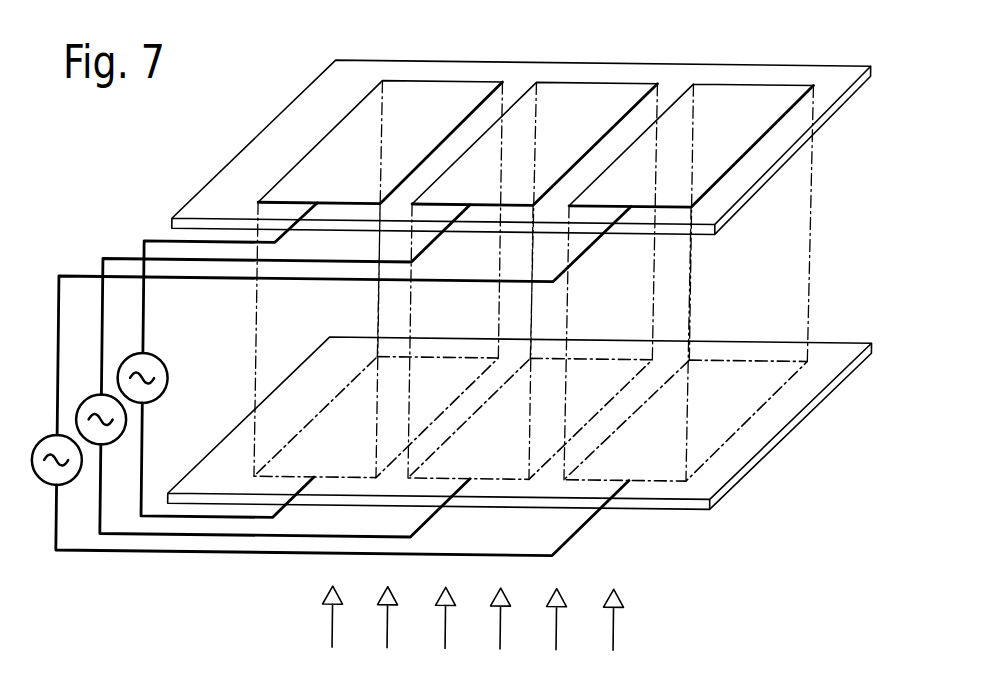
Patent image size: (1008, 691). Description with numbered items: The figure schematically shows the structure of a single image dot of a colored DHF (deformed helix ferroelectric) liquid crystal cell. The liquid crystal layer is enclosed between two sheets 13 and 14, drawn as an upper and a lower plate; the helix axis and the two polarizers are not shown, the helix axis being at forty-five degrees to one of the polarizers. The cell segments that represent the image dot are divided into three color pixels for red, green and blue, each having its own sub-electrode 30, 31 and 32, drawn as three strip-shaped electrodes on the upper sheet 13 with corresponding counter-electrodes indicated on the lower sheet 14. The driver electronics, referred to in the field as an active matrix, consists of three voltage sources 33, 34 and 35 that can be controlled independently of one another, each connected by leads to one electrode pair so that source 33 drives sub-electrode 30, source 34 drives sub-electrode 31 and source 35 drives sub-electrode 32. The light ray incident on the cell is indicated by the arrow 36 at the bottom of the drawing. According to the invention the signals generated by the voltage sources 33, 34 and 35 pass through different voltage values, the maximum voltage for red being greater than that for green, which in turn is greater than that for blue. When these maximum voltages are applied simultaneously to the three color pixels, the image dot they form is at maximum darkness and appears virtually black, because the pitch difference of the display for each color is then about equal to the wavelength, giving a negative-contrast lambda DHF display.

The sheet 13 is at (835, 113).
The sheet 14 is at (862, 338).
The sub-electrode 30 is at (425, 92).
The sub-electrode 31 is at (579, 87).
The sub-electrode 32 is at (735, 82).
The voltage source 33 is at (158, 405).
The voltage source 34 is at (117, 447).
The voltage source 35 is at (73, 488).
The arrow 36 is at (449, 641).